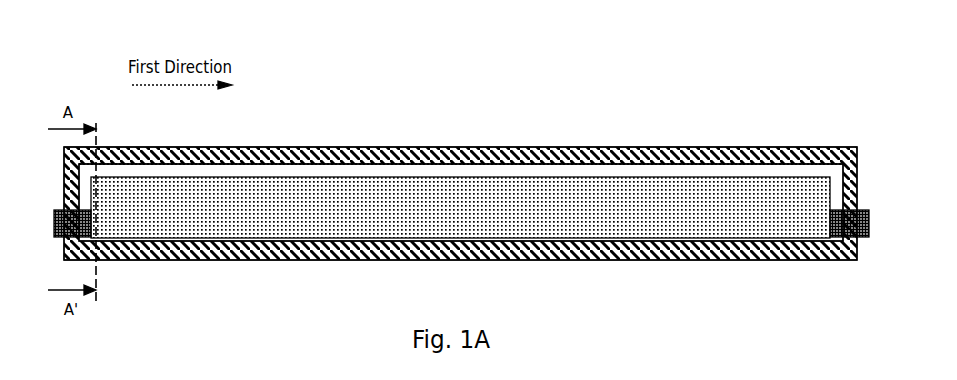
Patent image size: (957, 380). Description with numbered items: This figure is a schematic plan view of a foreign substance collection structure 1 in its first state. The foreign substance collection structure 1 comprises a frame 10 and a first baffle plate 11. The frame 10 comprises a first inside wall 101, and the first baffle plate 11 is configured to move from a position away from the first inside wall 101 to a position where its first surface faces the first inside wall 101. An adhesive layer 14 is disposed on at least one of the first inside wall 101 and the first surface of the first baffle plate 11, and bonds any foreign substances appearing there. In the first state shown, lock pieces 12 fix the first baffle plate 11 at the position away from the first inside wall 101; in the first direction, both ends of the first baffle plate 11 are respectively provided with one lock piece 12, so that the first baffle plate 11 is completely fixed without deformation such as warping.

The foreign substance collection structure 1 is at (64, 74).
The frame 10 is at (324, 160).
The adhesive layer 14 is at (276, 163).
The first inside wall 101 is at (832, 165).
The first baffle plate 11 is at (418, 200).
The lock piece 12 is at (92, 240).